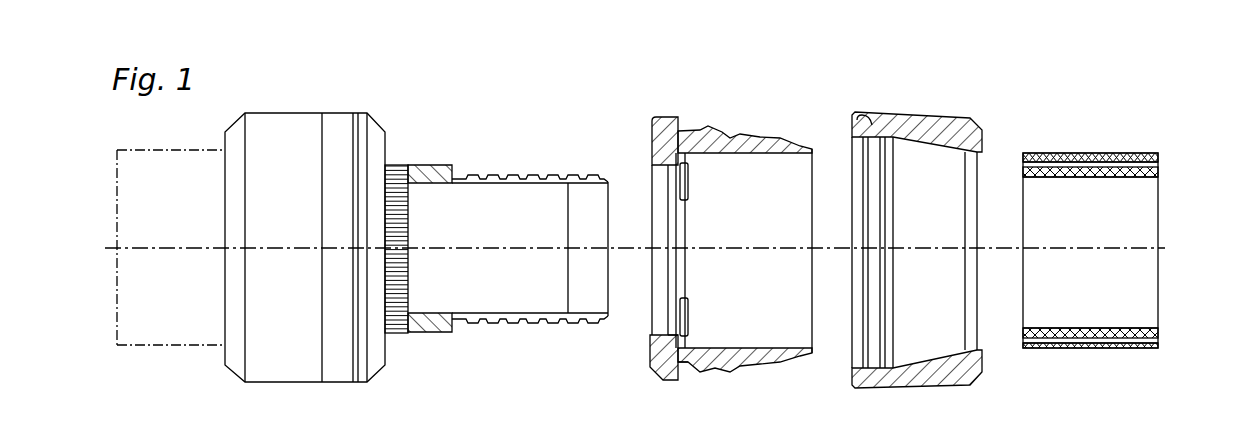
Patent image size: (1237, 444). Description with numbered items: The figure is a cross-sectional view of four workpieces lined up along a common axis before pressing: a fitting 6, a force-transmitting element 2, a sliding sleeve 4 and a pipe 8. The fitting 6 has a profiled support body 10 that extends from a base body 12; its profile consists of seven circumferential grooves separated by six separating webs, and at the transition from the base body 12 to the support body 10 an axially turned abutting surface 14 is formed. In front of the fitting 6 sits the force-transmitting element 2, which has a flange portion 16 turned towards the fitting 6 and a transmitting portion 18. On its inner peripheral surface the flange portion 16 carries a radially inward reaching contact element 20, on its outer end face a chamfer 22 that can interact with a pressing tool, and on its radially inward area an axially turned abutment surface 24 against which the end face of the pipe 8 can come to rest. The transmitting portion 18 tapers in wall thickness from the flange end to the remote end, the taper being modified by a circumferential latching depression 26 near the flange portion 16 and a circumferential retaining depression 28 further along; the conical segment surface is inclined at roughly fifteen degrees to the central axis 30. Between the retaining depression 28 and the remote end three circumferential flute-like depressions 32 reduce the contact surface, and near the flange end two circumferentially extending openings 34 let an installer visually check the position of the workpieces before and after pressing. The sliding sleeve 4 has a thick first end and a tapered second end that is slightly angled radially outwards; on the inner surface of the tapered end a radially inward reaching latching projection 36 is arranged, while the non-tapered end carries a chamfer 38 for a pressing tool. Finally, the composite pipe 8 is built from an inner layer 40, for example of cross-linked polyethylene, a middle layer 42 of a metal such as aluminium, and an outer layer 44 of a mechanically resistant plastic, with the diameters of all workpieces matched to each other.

The force-transmitting element 2 is at (749, 53).
The sliding sleeve 4 is at (920, 52).
The fitting 6 is at (479, 50).
The pipe 8 is at (1109, 90).
The support body 10 is at (553, 323).
The base body 12 is at (415, 333).
The abutting surface 14 is at (455, 172).
The flange portion 16 is at (667, 383).
The transmitting portion 18 is at (742, 134).
The contact element 20 is at (660, 172).
The chamfer 22 is at (657, 124).
The abutment surface 24 is at (680, 340).
The latching depression 26 is at (687, 370).
The retaining depression 28 is at (727, 135).
The central axis 30 is at (757, 246).
The depressions 32 is at (797, 356).
The openings 34 is at (690, 178).
The latching projection 36 is at (865, 130).
The chamfer 38 is at (980, 127).
The inner layer 40 is at (1150, 172).
The middle layer 42 is at (1155, 338).
The outer layer 44 is at (1152, 157).